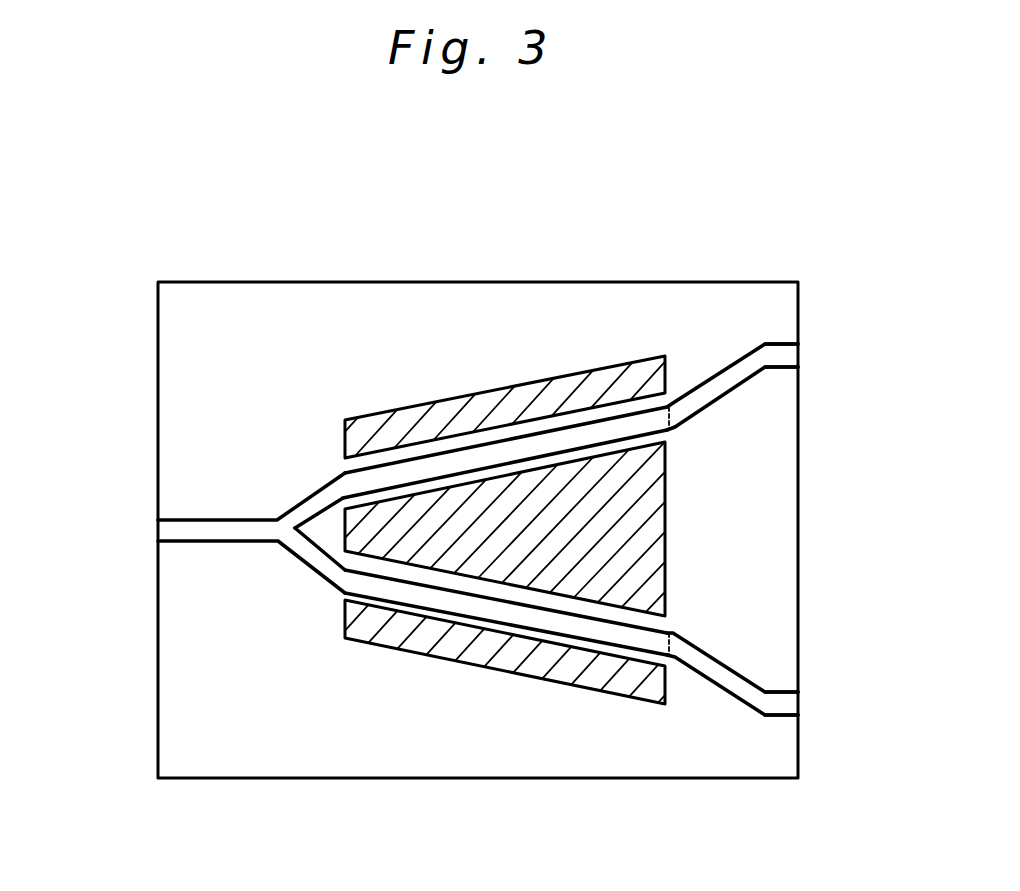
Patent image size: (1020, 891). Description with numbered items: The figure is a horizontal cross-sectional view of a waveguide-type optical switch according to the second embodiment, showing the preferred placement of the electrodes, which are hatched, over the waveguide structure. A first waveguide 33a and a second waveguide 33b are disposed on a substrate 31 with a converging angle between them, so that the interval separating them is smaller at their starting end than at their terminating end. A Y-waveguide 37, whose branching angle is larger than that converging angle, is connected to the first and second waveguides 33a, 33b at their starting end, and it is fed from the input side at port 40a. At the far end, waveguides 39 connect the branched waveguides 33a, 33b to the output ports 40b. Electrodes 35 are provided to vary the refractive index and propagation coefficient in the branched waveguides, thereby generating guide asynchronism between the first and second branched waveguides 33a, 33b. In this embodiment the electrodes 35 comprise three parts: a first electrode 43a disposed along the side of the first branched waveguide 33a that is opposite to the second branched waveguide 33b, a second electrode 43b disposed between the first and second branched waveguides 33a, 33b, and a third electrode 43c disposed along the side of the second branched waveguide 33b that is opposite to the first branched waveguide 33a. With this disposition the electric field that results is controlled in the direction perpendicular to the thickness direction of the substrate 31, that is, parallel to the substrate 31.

The substrate 31 is at (304, 290).
The first waveguide 33a is at (583, 433).
The second waveguide 33b is at (613, 630).
The electrodes 35 is at (355, 503).
The Y-waveguide 37 is at (338, 590).
The waveguides 39 is at (792, 372).
The input port 40a is at (158, 533).
The output ports 40b is at (800, 353).
The first electrode 43a is at (357, 438).
The second electrode 43b is at (360, 520).
The third electrode 43c is at (367, 607).